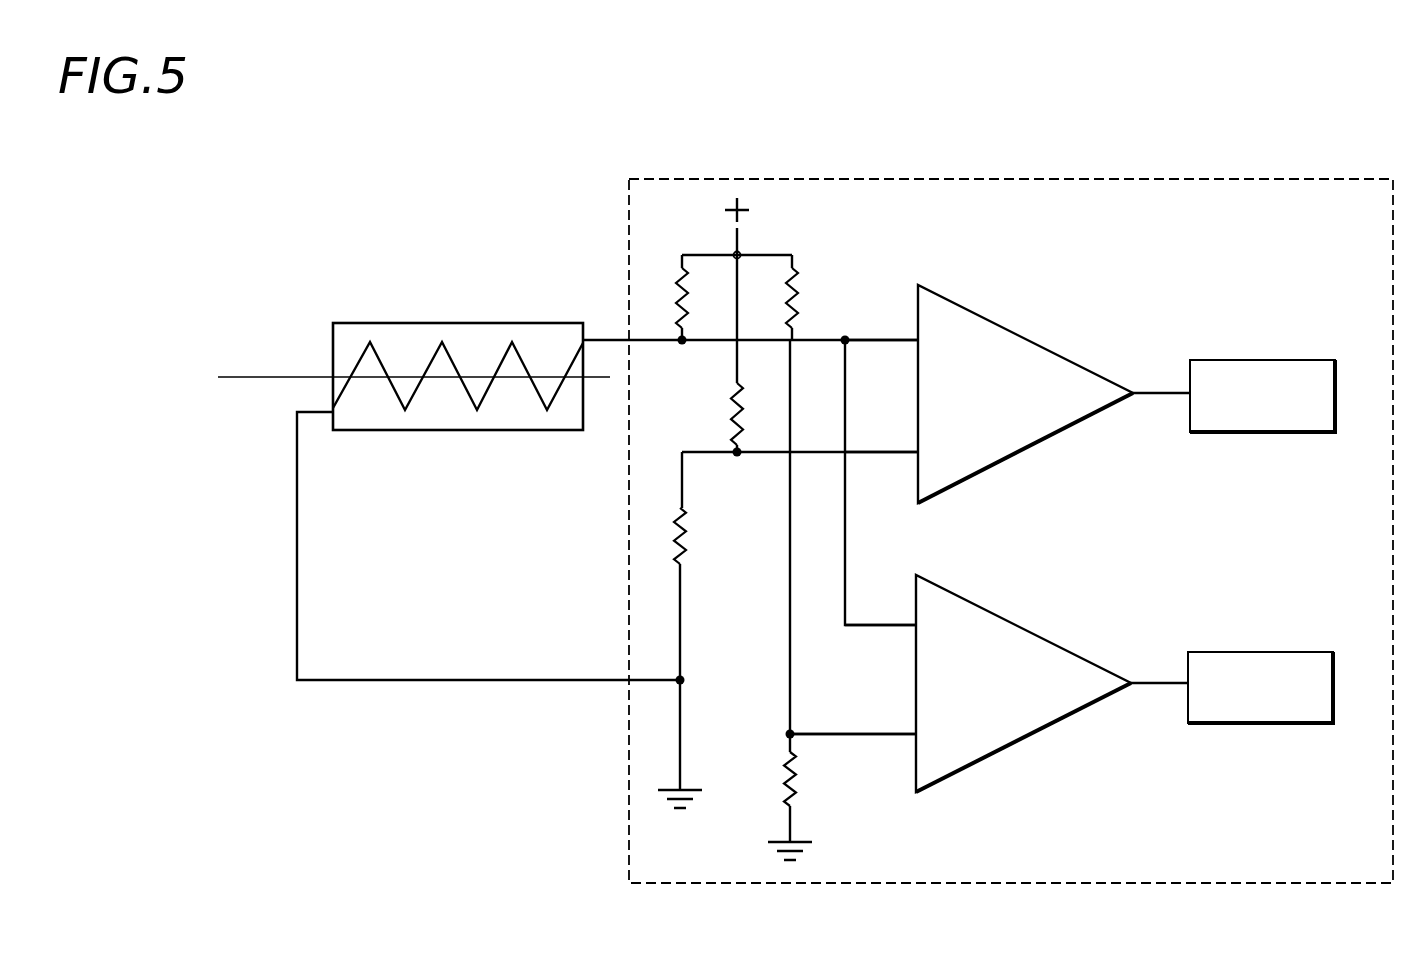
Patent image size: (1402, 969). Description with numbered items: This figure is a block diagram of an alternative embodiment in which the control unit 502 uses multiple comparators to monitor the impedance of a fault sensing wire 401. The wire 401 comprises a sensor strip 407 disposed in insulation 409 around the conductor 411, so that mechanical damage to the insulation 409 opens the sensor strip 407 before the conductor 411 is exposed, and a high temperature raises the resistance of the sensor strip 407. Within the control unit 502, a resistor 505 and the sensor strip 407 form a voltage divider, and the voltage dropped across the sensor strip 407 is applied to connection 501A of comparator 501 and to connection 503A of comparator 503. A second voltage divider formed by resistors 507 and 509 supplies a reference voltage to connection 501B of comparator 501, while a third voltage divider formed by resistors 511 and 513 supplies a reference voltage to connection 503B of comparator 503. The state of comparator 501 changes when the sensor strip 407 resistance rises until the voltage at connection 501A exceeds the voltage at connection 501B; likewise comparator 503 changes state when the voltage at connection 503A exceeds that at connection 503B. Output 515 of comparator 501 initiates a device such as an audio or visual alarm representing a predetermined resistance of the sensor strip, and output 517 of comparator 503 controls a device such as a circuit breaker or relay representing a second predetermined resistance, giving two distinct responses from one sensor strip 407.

The fault sensing wire 401 is at (387, 323).
The sensor strip 407 is at (453, 363).
The insulation 409 is at (415, 343).
The conductor 411 is at (283, 373).
The control unit 502 is at (1127, 179).
The resistor 505 is at (680, 278).
The resistor 507 is at (720, 402).
The resistor 509 is at (674, 530).
The resistor 511 is at (798, 280).
The resistor 513 is at (796, 782).
The comparator 501 is at (1060, 355).
The connection 501A is at (876, 338).
The connection 501B is at (876, 452).
The comparator 503 is at (1060, 647).
The connection 503A is at (882, 625).
The connection 503B is at (885, 734).
The output 515 is at (1253, 360).
The output 517 is at (1253, 652).